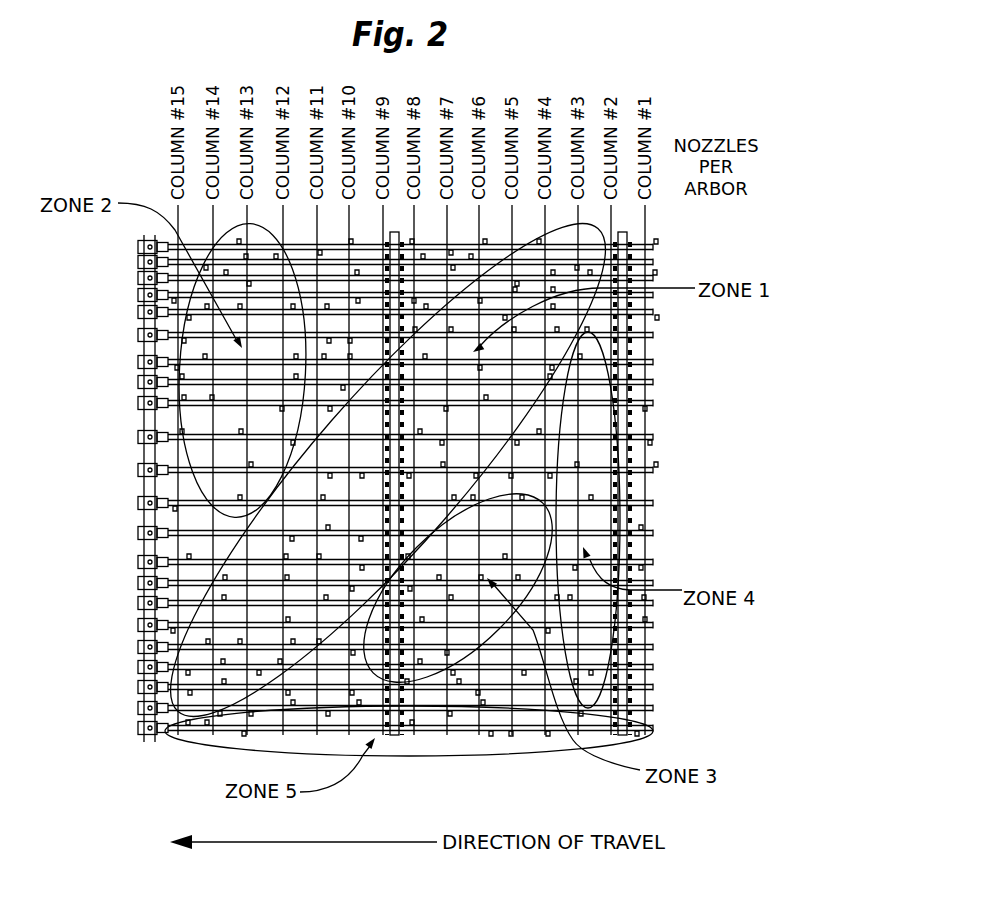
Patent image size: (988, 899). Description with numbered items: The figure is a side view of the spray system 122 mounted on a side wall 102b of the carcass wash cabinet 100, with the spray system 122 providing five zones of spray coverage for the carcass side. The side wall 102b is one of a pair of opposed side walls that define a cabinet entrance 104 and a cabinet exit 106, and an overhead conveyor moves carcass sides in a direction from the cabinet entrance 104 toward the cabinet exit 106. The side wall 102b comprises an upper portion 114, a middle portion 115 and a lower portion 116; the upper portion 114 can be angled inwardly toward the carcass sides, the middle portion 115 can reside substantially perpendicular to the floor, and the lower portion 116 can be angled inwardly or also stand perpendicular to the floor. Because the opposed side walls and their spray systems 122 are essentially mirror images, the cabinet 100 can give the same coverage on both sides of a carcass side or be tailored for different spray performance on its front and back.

The carcass wash cabinet 100 is at (633, 52).
The upper portion 114 is at (653, 262).
The spray system 122 is at (653, 405).
The side wall 102b is at (662, 478).
The cabinet entrance 104 is at (658, 543).
The middle portion 115 is at (138, 467).
The cabinet exit 106 is at (132, 544).
The lower portion 116 is at (137, 733).